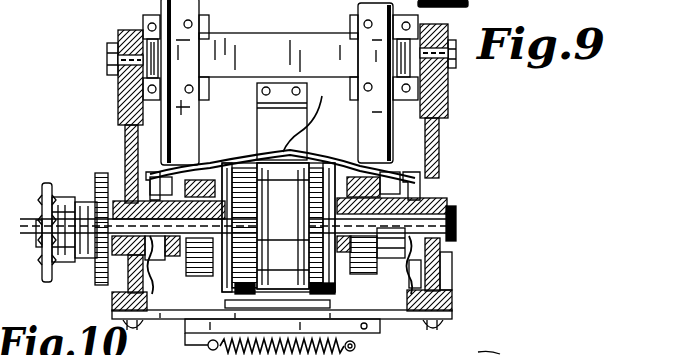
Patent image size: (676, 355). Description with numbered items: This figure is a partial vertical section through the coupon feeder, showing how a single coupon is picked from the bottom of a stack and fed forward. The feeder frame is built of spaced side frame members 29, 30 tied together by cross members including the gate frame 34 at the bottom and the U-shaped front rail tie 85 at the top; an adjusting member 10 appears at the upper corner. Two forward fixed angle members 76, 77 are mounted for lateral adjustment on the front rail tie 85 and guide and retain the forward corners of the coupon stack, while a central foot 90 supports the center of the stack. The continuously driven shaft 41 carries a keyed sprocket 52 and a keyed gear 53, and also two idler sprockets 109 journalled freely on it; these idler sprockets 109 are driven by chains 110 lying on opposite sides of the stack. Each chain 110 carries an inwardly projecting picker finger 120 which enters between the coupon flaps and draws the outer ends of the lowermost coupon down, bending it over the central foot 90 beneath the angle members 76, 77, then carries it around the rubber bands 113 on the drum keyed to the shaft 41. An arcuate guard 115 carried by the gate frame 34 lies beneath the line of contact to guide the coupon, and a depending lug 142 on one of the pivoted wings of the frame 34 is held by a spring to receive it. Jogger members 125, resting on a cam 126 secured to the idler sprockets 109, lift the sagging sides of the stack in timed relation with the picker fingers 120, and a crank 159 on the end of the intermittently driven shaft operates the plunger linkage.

The adjusting knob 10 is at (440, 20).
The side frame member 29 is at (437, 136).
The side frame member 30 is at (118, 99).
The gate frame 34 is at (177, 319).
The shaft 41 is at (455, 221).
The sprocket 52 is at (54, 180).
The gear 53 is at (102, 174).
The forward fixed angle member 76 is at (193, 133).
The forward fixed angle member 77 is at (368, 110).
The front rail tie 85 is at (257, 43).
The central foot 90 is at (295, 119).
The idler sprocket 109 is at (438, 188).
The chain 110 is at (148, 173).
The rubber band 113 is at (309, 288).
The arcuate guard 115 is at (328, 302).
The picker finger 120 is at (210, 164).
The jogger member 125 is at (285, 212).
The cam 126 is at (205, 278).
The depending lug 142 is at (357, 347).
The crank 159 is at (497, 352).